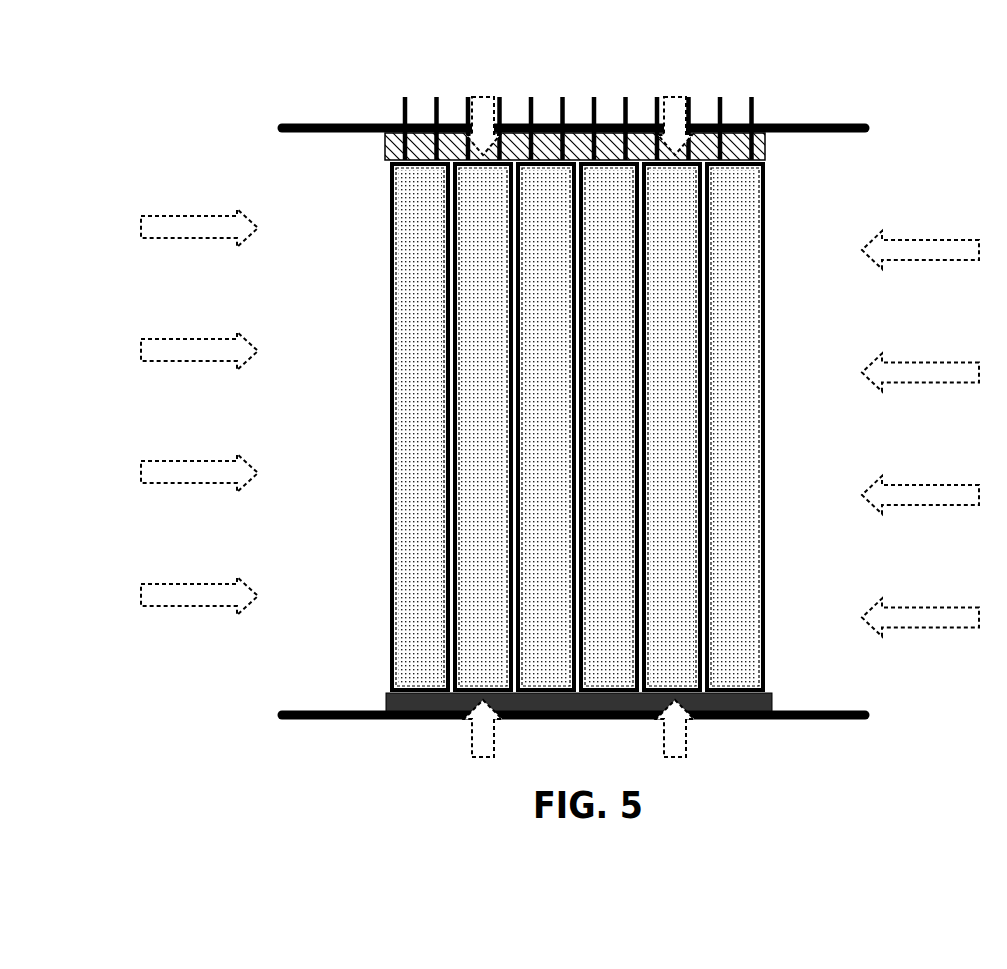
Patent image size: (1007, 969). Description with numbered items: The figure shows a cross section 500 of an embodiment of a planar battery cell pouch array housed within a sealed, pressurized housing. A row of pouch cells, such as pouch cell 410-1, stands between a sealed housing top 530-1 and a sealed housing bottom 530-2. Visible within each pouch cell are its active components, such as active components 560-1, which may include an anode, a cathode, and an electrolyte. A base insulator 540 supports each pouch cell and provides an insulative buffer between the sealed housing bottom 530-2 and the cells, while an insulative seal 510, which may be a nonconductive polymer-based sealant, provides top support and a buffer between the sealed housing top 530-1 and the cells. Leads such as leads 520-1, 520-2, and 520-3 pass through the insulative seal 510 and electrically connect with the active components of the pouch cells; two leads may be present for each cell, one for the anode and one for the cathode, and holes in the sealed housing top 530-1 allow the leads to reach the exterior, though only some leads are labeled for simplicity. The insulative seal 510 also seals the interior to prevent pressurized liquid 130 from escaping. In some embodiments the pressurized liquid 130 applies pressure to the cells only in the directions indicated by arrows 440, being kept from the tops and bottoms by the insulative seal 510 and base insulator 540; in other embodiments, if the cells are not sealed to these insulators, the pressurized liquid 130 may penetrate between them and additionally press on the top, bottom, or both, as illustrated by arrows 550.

The cross section 500 is at (155, 105).
The sealed housing top 530-1 is at (331, 124).
The sealed housing bottom 530-2 is at (337, 710).
The lead 520-1 is at (405, 96).
The lead 520-2 is at (468, 96).
The lead 520-3 is at (531, 96).
The insulative seal 510 is at (386, 160).
The base insulator 540 is at (770, 692).
The pressurized liquid 130 is at (547, 427).
The pouch cell 410-1 is at (395, 427).
The active components 560-1 is at (418, 578).
The arrows 550 is at (483, 95).
The arrows 440 is at (190, 216).